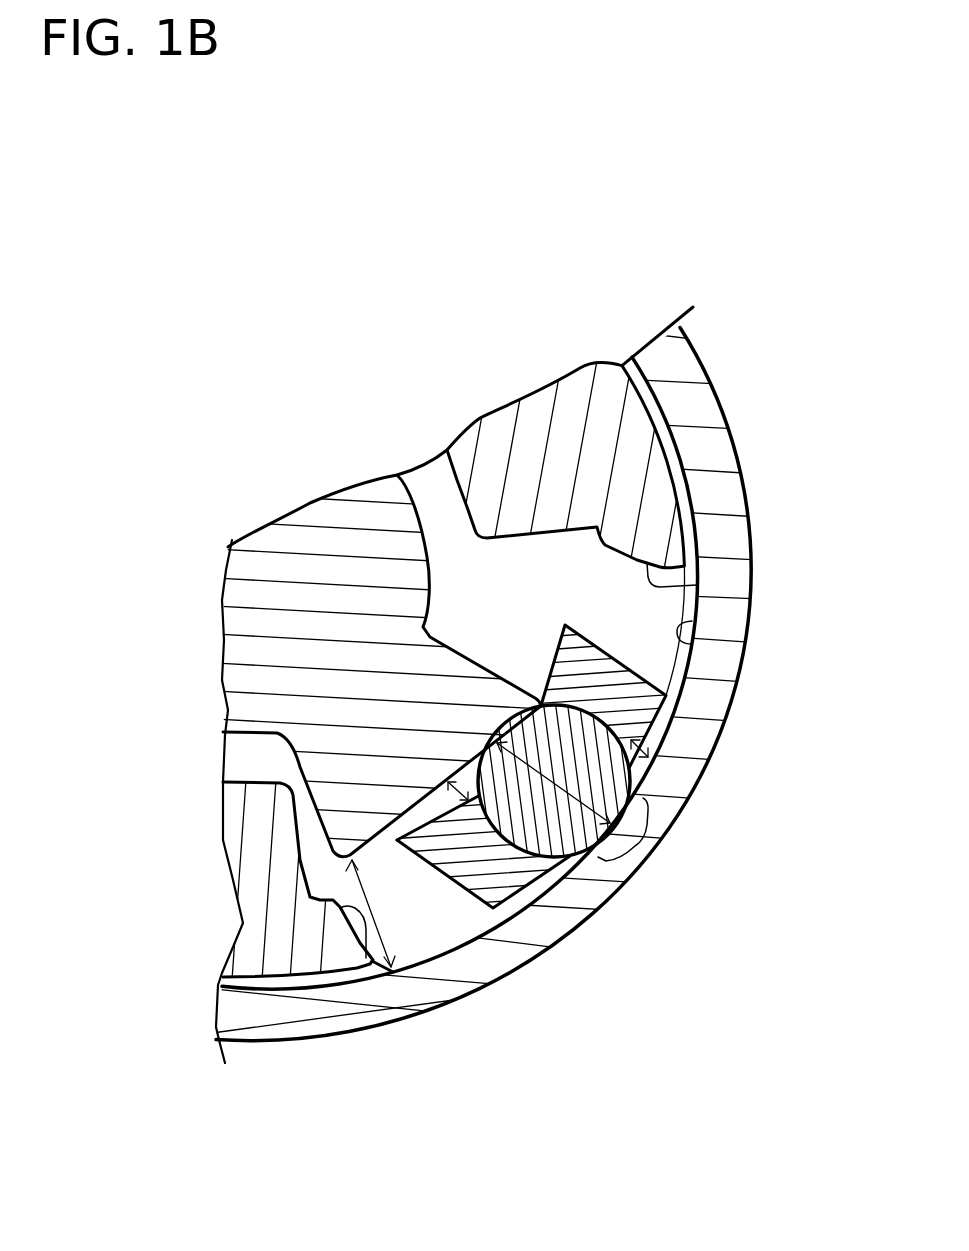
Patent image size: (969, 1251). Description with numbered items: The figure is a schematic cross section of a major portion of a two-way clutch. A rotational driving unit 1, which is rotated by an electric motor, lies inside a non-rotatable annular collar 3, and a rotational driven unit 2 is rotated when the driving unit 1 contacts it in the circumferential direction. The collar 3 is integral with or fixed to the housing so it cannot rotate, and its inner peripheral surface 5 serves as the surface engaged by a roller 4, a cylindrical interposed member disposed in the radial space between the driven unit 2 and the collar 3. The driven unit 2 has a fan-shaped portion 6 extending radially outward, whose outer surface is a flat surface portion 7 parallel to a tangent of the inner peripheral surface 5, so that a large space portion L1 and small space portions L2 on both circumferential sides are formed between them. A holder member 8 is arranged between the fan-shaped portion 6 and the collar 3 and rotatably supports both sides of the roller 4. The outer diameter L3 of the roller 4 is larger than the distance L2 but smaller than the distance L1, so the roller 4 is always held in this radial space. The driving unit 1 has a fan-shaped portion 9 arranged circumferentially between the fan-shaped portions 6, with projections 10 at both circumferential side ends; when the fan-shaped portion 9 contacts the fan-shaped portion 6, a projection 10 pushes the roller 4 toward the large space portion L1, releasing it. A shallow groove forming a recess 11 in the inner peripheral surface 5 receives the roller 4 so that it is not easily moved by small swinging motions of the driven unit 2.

The rotational driving unit 1 is at (432, 651).
The rotational driven unit 2 is at (387, 665).
The collar 3 is at (730, 493).
The roller 4 is at (607, 774).
The inner peripheral surface 5 is at (692, 633).
The fan-shaped portion 6 is at (470, 665).
The flat surface portion 7 is at (427, 803).
The holder member 8 is at (650, 688).
The fan-shaped portion 9 is at (533, 437).
The projection 10 is at (652, 576).
The recess 11 is at (657, 840).
The large space portion L1 is at (513, 853).
The small space portion L2 is at (380, 927).
The outer diameter L3 is at (580, 853).